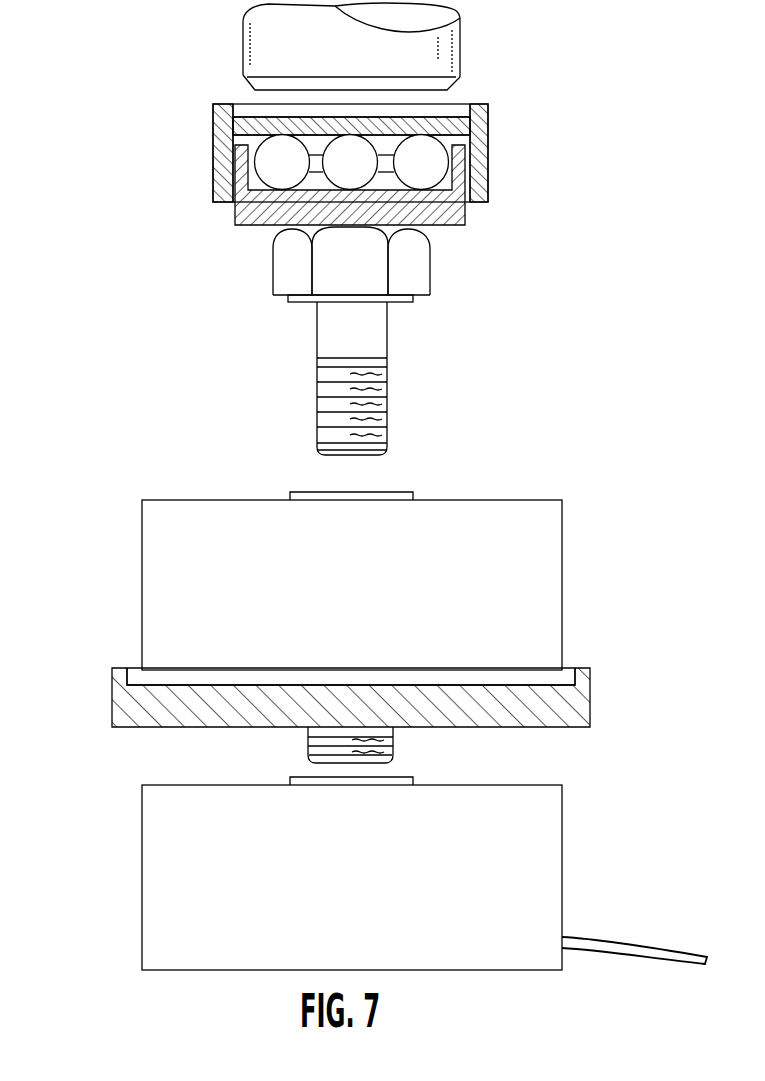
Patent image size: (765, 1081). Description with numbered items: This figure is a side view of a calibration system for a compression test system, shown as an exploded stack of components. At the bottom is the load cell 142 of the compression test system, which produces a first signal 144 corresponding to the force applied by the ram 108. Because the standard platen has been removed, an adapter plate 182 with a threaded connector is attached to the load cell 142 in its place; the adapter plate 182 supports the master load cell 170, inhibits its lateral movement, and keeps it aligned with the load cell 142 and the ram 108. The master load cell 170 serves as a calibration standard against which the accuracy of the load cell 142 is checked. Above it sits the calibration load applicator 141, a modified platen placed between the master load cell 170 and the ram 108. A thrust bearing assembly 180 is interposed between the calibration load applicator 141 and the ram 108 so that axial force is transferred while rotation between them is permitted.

The ram 108 is at (243, 53).
The thrust bearing assembly 180 is at (198, 169).
The calibration load applicator 141 is at (280, 337).
The master load cell 170 is at (360, 588).
The adapter plate 182 is at (112, 710).
The load cell 142 is at (368, 887).
The first signal 144 is at (632, 945).